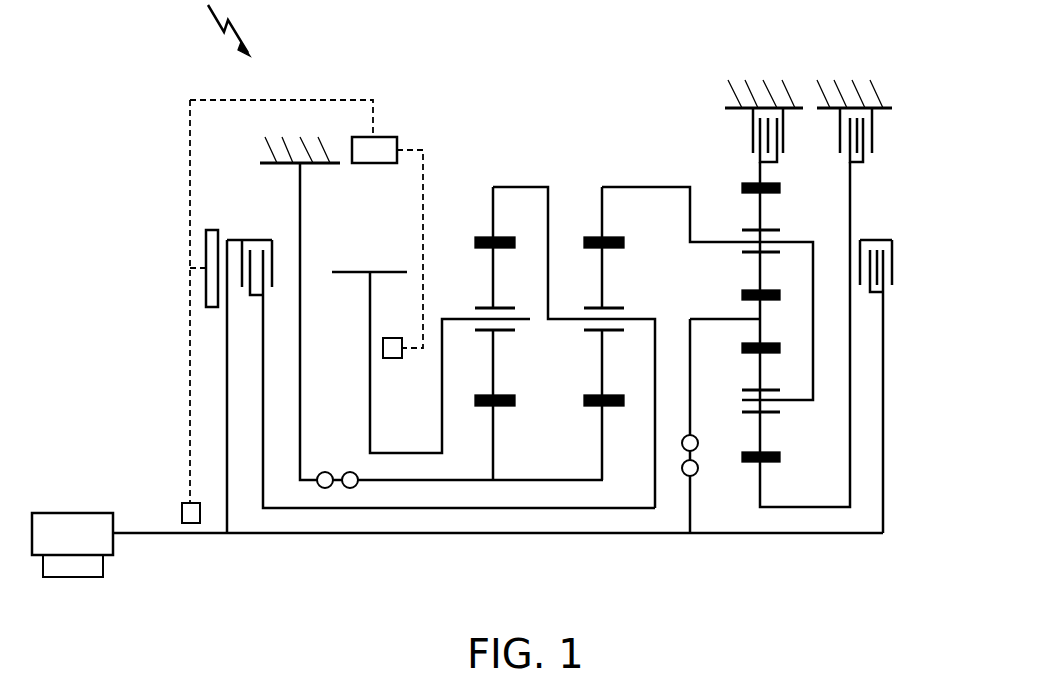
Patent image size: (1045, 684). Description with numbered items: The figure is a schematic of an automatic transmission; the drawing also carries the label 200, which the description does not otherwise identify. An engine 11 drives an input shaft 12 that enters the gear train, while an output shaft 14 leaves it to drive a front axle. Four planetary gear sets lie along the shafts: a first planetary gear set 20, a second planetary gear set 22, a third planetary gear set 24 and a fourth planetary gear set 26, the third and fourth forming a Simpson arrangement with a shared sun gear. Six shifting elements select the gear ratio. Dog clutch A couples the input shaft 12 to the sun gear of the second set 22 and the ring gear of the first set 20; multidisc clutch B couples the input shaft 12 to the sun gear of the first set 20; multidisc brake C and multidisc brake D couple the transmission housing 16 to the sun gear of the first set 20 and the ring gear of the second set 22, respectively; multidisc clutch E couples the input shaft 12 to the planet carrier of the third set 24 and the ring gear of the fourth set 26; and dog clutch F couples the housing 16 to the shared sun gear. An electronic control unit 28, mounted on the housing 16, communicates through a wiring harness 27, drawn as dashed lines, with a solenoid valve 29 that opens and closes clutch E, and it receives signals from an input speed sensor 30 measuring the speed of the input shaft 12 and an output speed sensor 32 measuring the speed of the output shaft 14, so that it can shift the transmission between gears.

The transmission 200 is at (198, 683).
The input shaft 12 is at (137, 533).
The engine 11 is at (113, 545).
The solenoid valve 29 is at (83, 580).
The wiring harness 27 is at (188, 372).
The input speed sensor 30 is at (180, 515).
The electronic control unit 28 is at (390, 137).
The output speed sensor 32 is at (385, 358).
The transmission housing 16 is at (322, 165).
The multidisc clutch E is at (265, 240).
The output shaft 14 is at (375, 410).
The dog clutch F is at (320, 488).
The third planetary gear set 24 is at (575, 287).
The fourth planetary gear set 26 is at (513, 345).
The second planetary gear set 22 is at (802, 224).
The first planetary gear set 20 is at (783, 423).
The dog clutch A is at (698, 473).
The multidisc brake D is at (753, 140).
The multidisc brake C is at (872, 140).
The multidisc clutch B is at (870, 240).